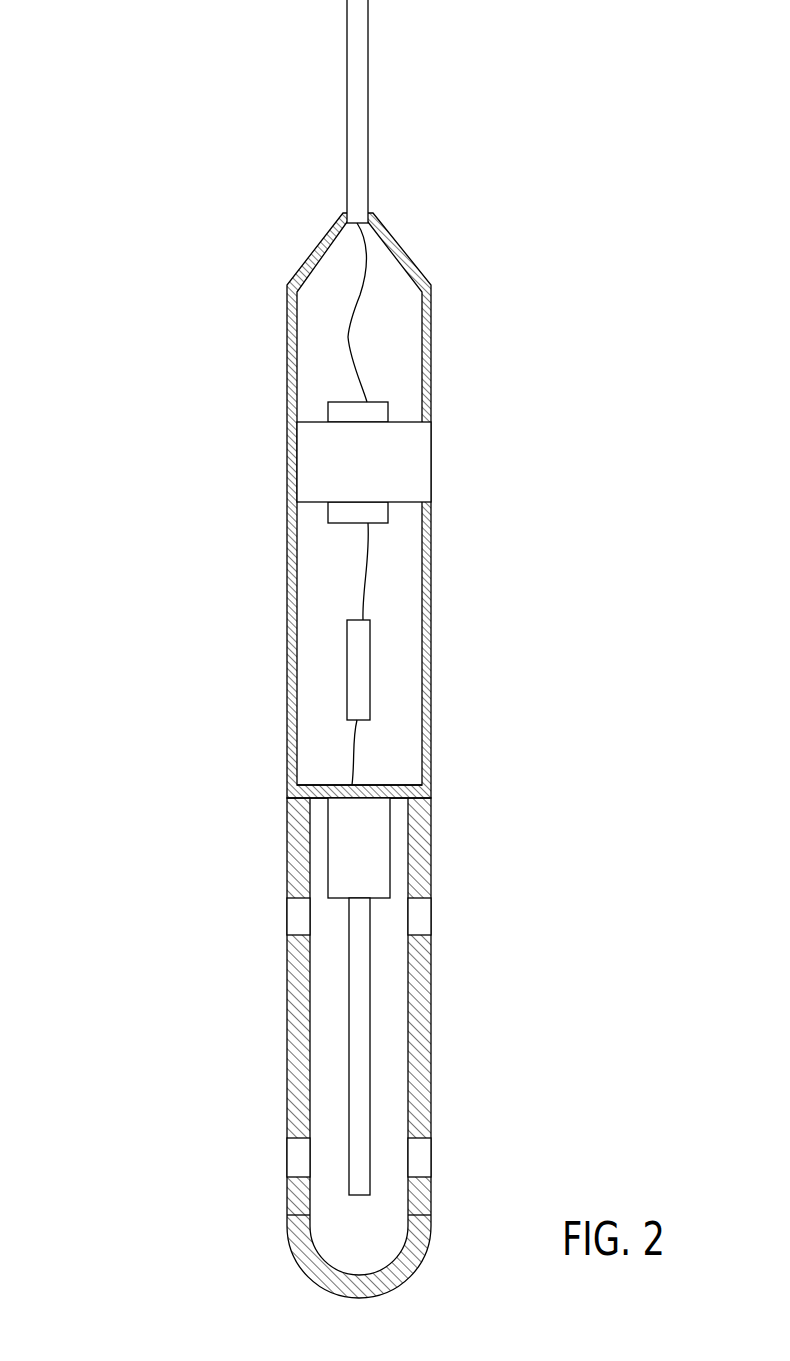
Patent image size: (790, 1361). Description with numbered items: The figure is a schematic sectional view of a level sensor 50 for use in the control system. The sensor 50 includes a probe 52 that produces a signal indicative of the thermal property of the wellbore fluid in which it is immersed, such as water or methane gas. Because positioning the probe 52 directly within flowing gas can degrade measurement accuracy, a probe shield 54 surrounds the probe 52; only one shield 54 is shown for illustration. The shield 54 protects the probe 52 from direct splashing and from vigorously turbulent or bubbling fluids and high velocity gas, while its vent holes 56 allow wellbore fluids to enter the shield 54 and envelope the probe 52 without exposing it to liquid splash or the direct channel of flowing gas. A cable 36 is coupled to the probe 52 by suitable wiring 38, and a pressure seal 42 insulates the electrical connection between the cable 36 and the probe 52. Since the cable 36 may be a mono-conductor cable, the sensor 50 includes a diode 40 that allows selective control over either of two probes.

The cable 36 is at (368, 105).
The wiring 38 is at (347, 340).
The diode 40 is at (347, 630).
The pressure seal 42 is at (431, 458).
The level sensor 50 is at (279, 649).
The probe 52 is at (349, 1007).
The probe shield 54 is at (431, 1047).
The vent holes 56 is at (431, 916).